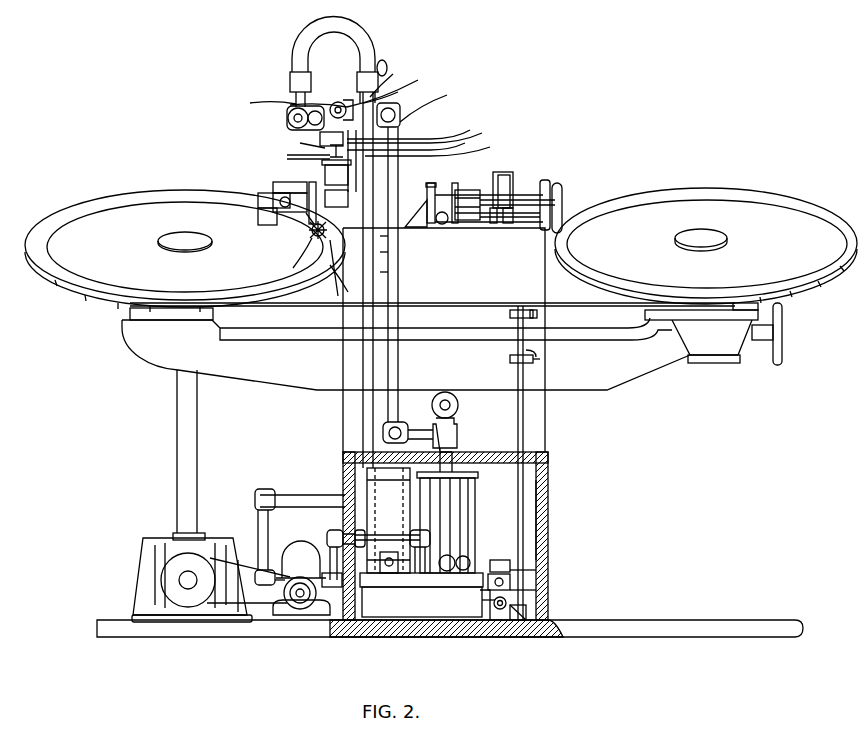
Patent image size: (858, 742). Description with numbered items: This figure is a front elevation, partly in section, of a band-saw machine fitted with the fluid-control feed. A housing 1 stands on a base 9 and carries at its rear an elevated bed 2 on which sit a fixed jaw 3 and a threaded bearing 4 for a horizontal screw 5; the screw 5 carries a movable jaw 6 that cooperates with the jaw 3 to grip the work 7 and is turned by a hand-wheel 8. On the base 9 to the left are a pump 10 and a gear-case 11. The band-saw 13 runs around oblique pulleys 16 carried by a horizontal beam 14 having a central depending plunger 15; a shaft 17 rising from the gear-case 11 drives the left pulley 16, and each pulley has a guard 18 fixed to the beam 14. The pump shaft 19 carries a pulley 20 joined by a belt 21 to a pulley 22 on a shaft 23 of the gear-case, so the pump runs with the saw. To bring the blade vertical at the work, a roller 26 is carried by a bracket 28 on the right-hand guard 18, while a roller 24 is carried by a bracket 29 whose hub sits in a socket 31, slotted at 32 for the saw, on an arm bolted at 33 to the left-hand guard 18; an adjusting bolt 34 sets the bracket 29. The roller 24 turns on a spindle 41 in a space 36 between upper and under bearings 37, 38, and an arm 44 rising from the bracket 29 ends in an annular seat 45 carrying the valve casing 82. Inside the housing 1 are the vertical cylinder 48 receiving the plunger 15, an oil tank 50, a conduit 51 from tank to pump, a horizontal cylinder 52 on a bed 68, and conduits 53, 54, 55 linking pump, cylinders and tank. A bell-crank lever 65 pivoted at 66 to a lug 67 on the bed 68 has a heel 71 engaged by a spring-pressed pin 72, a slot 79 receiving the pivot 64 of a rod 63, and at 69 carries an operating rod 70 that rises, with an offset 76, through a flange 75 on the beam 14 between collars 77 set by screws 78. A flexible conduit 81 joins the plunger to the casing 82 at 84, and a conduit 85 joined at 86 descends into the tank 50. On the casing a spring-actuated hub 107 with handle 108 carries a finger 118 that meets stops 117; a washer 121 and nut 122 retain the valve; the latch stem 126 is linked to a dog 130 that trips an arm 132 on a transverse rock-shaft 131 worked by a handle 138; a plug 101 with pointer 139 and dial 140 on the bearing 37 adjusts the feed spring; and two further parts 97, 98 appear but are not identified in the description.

The housing 1 is at (549, 530).
The elevated table or bed 2 is at (470, 190).
The fixed work-holding jaw 3 is at (432, 183).
The internally screw-threaded bearing 4 is at (545, 195).
The horizontal screw 5 is at (493, 223).
The movable work-holding jaw 6 is at (460, 170).
The work 7 is at (446, 224).
The hand-wheel 8 is at (562, 188).
The base 9 is at (616, 637).
The pump 10 is at (298, 556).
The gear-case 11 is at (150, 560).
The band-saw 13 is at (464, 303).
The horizontal beam 14 is at (452, 340).
The plunger 15 is at (453, 445).
The pulleys 16 is at (443, 244).
The shaft 17 is at (177, 445).
The guard 18 is at (167, 194).
The pump shaft 19 is at (306, 618).
The pulley 20 is at (283, 600).
The belt 21 is at (222, 622).
The pulley 22 is at (172, 590).
The shaft 23 is at (179, 581).
The roller 24 is at (310, 236).
The roller 26 is at (509, 223).
The bracket 28 is at (515, 180).
The bracket 29 is at (285, 239).
The socket 31 is at (273, 186).
The slot 32 is at (258, 203).
The bolts 33 is at (284, 196).
The adjusting bolt 34 is at (312, 182).
The space 36 is at (293, 268).
The upper bearing 37 is at (336, 183).
The under bearing 38 is at (419, 208).
The spindle 41 is at (322, 238).
The arm 44 is at (287, 157).
The annular seat 45 is at (408, 133).
The vertical cylinder 48 is at (478, 500).
The oil tank 50 is at (388, 520).
The conduit 51 is at (286, 505).
The horizontal cylinder 52 is at (422, 604).
The conduit 53 is at (392, 540).
The conduit 54 is at (468, 546).
The conduit 55 is at (310, 594).
The rod 63 is at (497, 558).
The pivot 64 is at (501, 575).
The bell-crank lever 65 is at (499, 620).
The pivot 66 is at (520, 593).
The lug 67 is at (488, 618).
The bed 68 is at (421, 597).
The pivot 69 is at (519, 624).
The operating rod 70 is at (549, 494).
The heel 71 is at (484, 608).
The spring-pressed pin 72 is at (478, 620).
The flange 75 is at (538, 347).
The offset 76 is at (527, 411).
The collars 77 is at (510, 314).
The screws 78 is at (537, 315).
The slot 79 is at (520, 573).
The conduit 81 is at (388, 274).
The valve casing 82 is at (391, 81).
The connection 84 is at (391, 92).
The conduit 85 is at (366, 361).
The connection 86 is at (288, 126).
The rod 97 is at (414, 131).
The block 98 is at (320, 140).
The plug 101 is at (300, 143).
The hub 107 is at (338, 102).
The handle 108 is at (384, 62).
The stops 117 is at (354, 89).
The finger 118 is at (334, 61).
The washer 121 is at (259, 100).
The nut 122 is at (288, 117).
The latch stem 126 is at (404, 113).
The dog 130 is at (436, 103).
The rock-shaft 131 is at (388, 253).
The arm 132 is at (388, 236).
The handle 138 is at (329, 281).
The combined handle and pointer 139 is at (406, 143).
The dial 140 is at (430, 143).